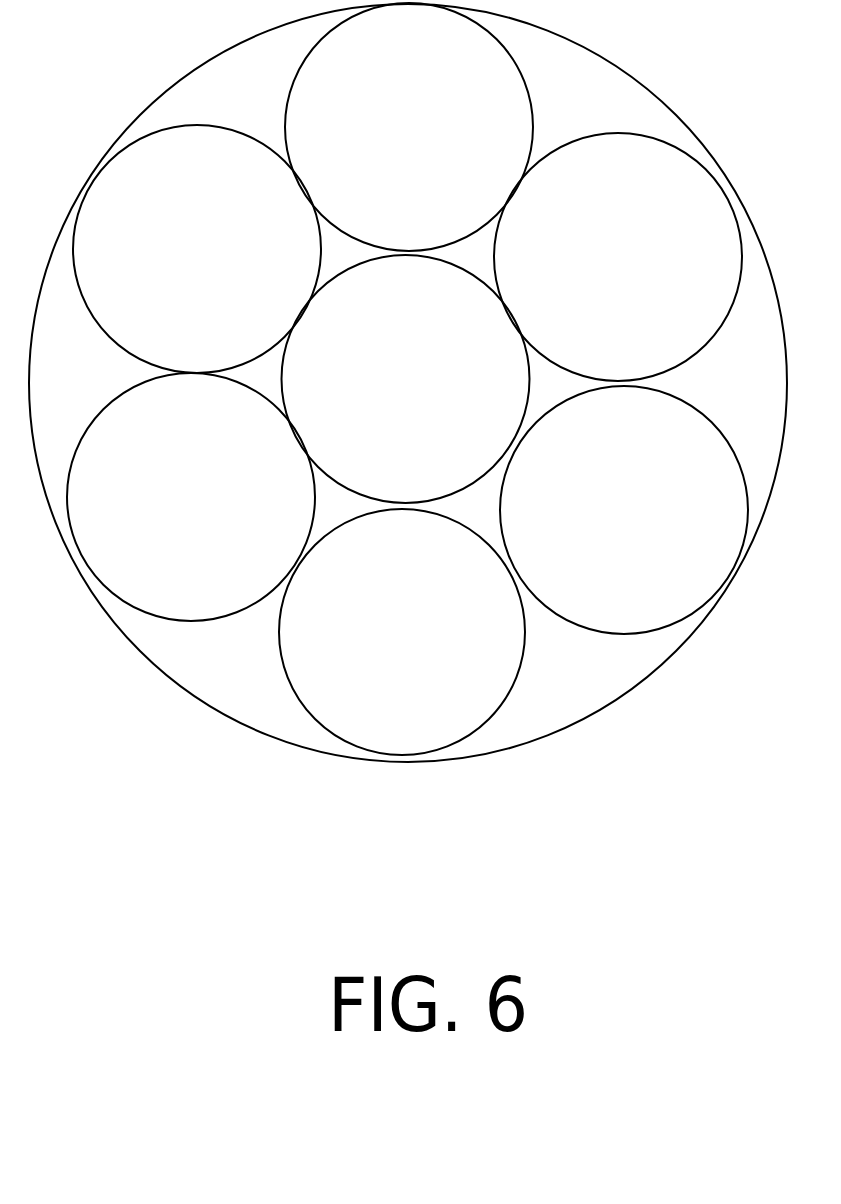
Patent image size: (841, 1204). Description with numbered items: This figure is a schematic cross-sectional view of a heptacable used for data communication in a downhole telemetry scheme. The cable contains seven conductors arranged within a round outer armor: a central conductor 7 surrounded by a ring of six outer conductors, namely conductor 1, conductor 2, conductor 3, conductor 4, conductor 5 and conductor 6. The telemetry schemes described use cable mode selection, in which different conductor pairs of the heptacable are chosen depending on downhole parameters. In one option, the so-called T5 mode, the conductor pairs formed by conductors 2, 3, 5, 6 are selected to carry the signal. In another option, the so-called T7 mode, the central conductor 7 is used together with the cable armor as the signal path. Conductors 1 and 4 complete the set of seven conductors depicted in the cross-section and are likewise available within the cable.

The conductor 1 is at (409, 127).
The conductor 2 is at (197, 249).
The conductor 3 is at (191, 497).
The conductor 4 is at (402, 632).
The conductor 5 is at (624, 510).
The conductor 6 is at (618, 257).
The conductor 7 is at (406, 379).